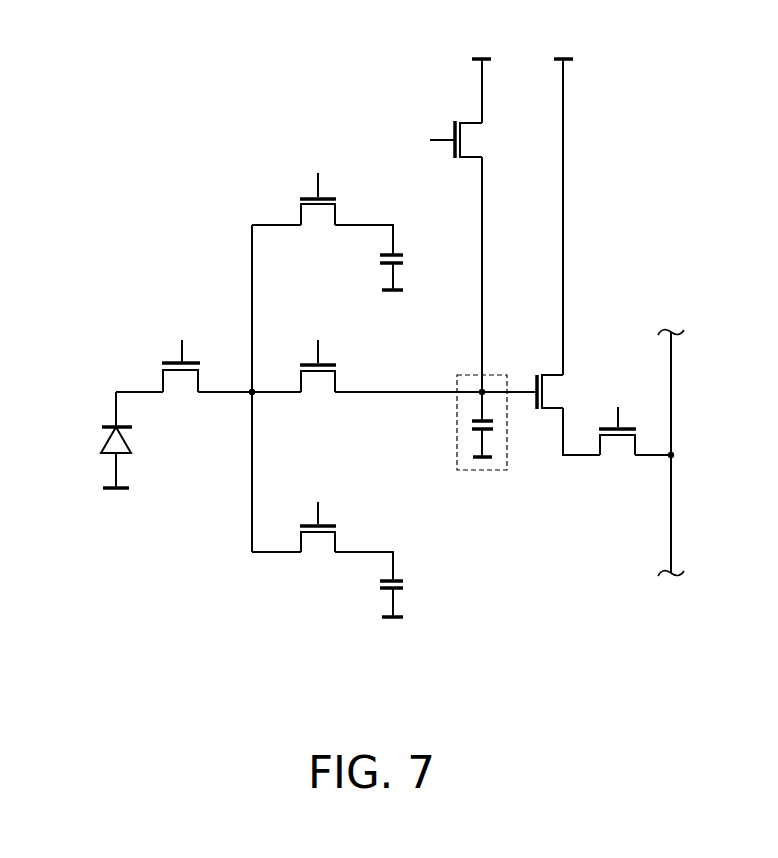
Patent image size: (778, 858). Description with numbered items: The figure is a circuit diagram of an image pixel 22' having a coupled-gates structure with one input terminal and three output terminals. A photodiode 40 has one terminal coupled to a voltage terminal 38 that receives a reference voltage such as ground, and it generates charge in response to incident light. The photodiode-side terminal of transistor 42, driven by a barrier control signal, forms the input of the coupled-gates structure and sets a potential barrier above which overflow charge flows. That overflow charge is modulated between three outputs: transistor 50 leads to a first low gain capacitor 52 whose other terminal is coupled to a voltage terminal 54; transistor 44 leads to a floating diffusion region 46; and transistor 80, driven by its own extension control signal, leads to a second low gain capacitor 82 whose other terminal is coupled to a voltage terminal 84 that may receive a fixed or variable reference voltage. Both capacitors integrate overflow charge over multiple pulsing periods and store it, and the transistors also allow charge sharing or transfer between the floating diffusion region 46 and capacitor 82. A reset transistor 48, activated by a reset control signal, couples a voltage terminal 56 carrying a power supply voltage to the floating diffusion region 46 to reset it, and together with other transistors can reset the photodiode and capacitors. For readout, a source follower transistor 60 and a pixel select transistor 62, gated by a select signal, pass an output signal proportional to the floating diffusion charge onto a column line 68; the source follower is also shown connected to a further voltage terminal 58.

The image pixel 22' is at (384, 336).
The voltage terminal 38 is at (117, 500).
The photodiode 40 is at (93, 445).
The transistor 42 is at (178, 397).
The transistor 44 is at (317, 397).
The floating diffusion region 46 is at (480, 472).
The reset transistor 48 is at (485, 142).
The transistor 50 is at (318, 232).
The low gain capacitor 52 is at (408, 258).
The voltage terminal 54 is at (393, 302).
The voltage terminal 56 is at (480, 52).
The supply voltage terminal 58 is at (563, 52).
The source follower transistor 60 is at (555, 417).
The pixel select transistor 62 is at (618, 458).
The column line 68 is at (673, 407).
The transistor 80 is at (318, 558).
The low gain capacitor 82 is at (408, 587).
The voltage terminal 84 is at (393, 628).